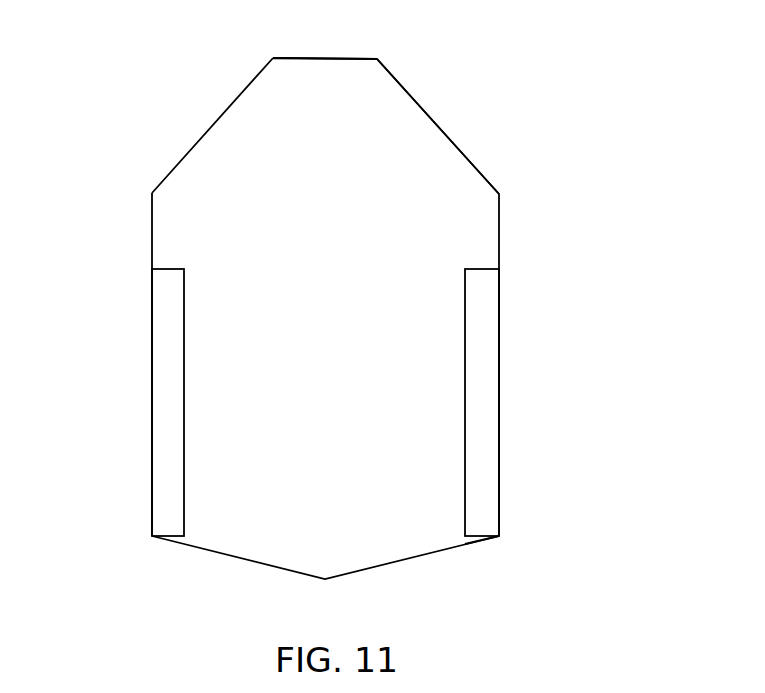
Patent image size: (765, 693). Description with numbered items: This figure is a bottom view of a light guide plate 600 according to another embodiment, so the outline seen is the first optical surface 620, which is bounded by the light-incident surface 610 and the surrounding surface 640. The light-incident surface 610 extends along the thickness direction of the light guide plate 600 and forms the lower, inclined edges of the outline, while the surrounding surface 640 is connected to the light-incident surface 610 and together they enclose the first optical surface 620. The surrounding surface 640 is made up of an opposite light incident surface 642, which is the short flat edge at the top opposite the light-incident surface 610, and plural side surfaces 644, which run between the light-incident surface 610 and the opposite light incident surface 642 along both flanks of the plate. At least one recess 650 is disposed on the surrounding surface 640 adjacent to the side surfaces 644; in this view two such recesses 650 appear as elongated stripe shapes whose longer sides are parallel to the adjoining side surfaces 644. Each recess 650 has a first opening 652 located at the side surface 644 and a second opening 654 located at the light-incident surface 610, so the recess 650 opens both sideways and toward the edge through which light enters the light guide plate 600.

The light guide plate 600 is at (108, 94).
The light-incident surface 610 is at (255, 563).
The first optical surface 620 is at (165, 240).
The surrounding surface 640 is at (615, 33).
The opposite light incident surface 642 is at (352, 59).
The side surfaces 644 is at (499, 217).
The recess 650 is at (165, 418).
The first opening 652 is at (499, 397).
The second opening 654 is at (478, 538).